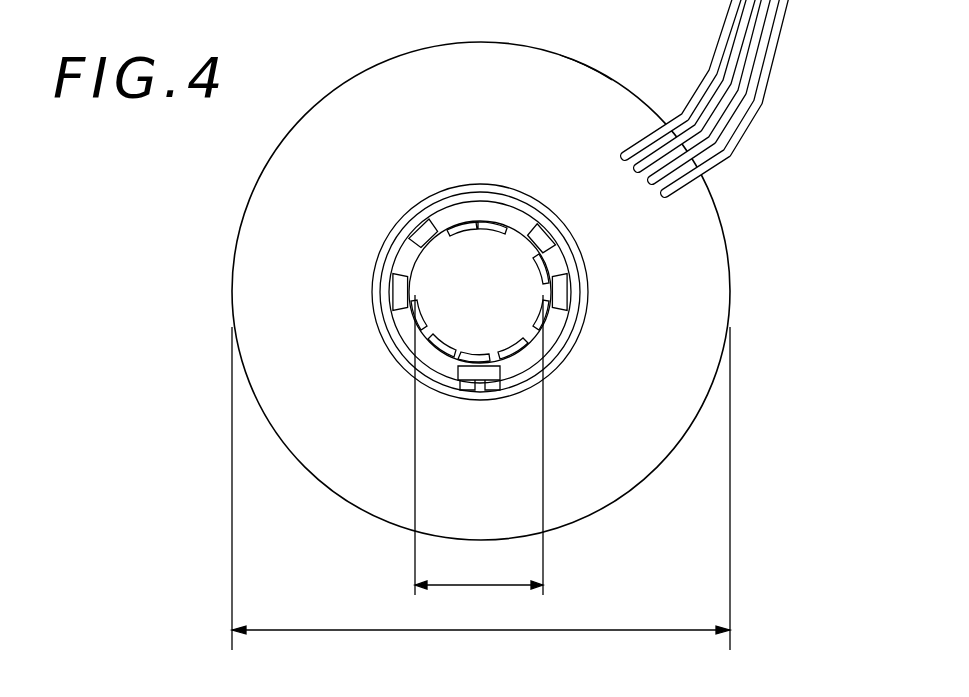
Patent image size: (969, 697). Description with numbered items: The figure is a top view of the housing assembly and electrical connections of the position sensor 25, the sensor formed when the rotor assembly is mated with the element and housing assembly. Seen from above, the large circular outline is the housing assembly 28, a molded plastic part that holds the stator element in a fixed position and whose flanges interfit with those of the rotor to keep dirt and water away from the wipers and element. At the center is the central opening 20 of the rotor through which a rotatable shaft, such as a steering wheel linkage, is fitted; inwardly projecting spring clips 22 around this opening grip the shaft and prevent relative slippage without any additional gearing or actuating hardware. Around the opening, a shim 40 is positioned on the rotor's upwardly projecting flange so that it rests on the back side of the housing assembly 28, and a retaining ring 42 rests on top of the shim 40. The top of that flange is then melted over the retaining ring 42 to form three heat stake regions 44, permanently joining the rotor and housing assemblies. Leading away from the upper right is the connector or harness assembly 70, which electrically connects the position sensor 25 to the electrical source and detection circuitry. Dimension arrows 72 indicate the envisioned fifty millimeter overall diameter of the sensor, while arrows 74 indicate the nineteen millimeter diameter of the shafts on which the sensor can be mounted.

The central opening 20 is at (502, 285).
The spring clips 22 is at (406, 297).
The position sensor 25 is at (353, 72).
The housing assembly 28 is at (582, 56).
The shim 40 is at (513, 183).
The retaining ring 42 is at (562, 367).
The heat stake regions 44 is at (455, 388).
The connector or harness assembly 70 is at (780, 40).
The arrows indicating sensor diameter 72 is at (274, 633).
The arrows indicating shaft diameter 74 is at (420, 583).